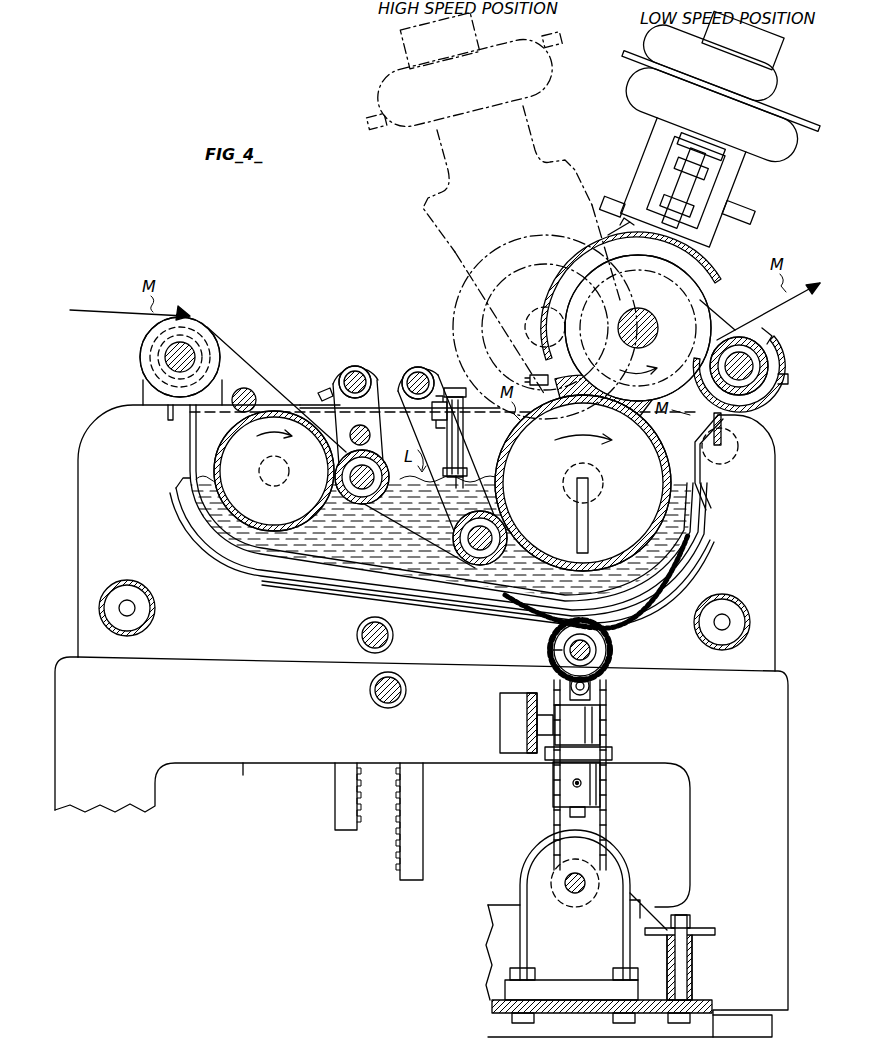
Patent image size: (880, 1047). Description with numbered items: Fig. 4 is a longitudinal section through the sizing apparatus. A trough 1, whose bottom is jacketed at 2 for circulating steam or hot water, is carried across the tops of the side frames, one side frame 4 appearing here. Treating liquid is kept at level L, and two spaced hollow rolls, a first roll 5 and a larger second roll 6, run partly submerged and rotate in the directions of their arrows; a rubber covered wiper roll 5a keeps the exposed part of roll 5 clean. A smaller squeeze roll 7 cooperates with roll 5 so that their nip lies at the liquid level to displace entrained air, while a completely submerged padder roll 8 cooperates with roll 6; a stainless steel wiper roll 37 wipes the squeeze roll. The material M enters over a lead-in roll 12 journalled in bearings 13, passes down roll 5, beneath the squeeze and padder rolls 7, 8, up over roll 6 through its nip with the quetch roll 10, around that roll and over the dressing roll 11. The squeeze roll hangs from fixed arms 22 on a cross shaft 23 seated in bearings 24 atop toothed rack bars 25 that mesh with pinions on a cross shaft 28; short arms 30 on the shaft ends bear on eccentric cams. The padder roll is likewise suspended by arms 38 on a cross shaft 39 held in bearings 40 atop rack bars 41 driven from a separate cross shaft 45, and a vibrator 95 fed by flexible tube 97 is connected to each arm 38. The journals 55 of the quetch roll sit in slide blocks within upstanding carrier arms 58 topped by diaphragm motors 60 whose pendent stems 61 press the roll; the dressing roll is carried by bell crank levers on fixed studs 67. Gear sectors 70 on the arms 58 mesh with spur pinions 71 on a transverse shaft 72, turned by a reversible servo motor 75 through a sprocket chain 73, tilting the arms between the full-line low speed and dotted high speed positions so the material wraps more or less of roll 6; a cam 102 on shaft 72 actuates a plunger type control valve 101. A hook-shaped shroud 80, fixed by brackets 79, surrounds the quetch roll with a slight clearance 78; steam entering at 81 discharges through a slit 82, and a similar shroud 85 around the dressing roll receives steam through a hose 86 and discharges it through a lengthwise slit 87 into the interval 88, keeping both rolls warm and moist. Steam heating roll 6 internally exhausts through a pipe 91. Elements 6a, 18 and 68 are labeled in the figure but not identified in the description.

The trough 1 is at (786, 485).
The jacket 2 is at (266, 572).
The side frame 4 is at (243, 775).
The first roll 5 is at (213, 494).
The wiper roll 5a is at (236, 408).
The second roll 6 is at (684, 504).
The drum shaft 6a is at (604, 483).
The squeeze roll 7 is at (386, 500).
The padder roll 8 is at (470, 515).
The quetch roll 10 is at (610, 246).
The dressing roll 11 is at (770, 362).
The lead-in roll 12 is at (205, 335).
The bearings 13 is at (213, 354).
The base plate 18 is at (492, 1006).
The fixed arms 22 is at (345, 409).
The cross shaft 23 is at (352, 372).
The bearings 24 is at (372, 370).
The toothed rack bars 25 is at (340, 815).
The cross shaft 28 is at (357, 635).
The short arms 30 is at (324, 390).
The wiper roll 37 is at (372, 436).
The arms 38 is at (470, 474).
The cross shaft 39 is at (416, 372).
The bearings 40 is at (432, 390).
The rack bars 41 is at (420, 818).
The cross shaft 45 is at (370, 690).
The journals 55 is at (655, 300).
The carrier arms 58 is at (770, 205).
The diaphragm motors 60 is at (780, 96).
The pendent stems 61 is at (700, 198).
The fixed studs 67 is at (714, 462).
The pivot 68 is at (728, 447).
The gear sectors 70 is at (545, 622).
The spur pinions 71 is at (542, 654).
The transverse shaft 72 is at (598, 650).
The sprocket chain 73 is at (606, 722).
The reversible servo motor 75 is at (610, 915).
The clearance 78 is at (572, 298).
The brackets 79 is at (630, 220).
The shroud 80 is at (578, 278).
The steam inlet 81 is at (540, 374).
The slit 82 is at (730, 316).
The shroud 85 is at (777, 402).
The hose 86 is at (724, 416).
The lengthwise slit 87 is at (768, 338).
The interval 88 is at (788, 382).
The pipe 91 is at (590, 520).
The vibrator 95 is at (464, 430).
The flexible tubes 97 is at (448, 398).
The plunger type control valve 101 is at (588, 782).
The cam 102 is at (598, 684).